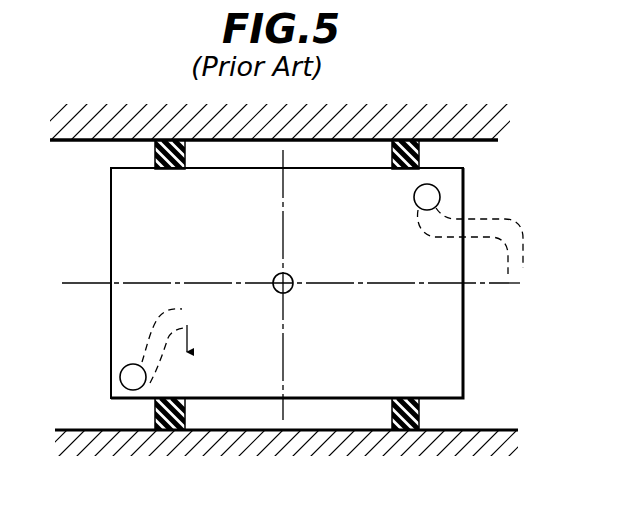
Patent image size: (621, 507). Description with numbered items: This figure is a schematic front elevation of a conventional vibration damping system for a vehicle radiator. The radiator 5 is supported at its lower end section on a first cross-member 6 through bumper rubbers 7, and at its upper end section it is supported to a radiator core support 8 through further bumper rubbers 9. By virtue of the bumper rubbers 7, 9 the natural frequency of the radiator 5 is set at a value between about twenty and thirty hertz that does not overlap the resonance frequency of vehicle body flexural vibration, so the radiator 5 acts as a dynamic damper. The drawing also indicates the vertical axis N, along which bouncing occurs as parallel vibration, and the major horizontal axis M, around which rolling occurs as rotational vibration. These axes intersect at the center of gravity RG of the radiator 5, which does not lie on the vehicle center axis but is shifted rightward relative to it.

The radiator 5 is at (110, 250).
The first cross-member 6 is at (73, 430).
The bumper rubbers 7 is at (173, 432).
The radiator core support 8 is at (96, 130).
The bumper rubbers 9 is at (153, 152).
The major horizontal axis M is at (276, 282).
The vertical axis N is at (293, 280).
The center of gravity of the radiator RG is at (290, 291).